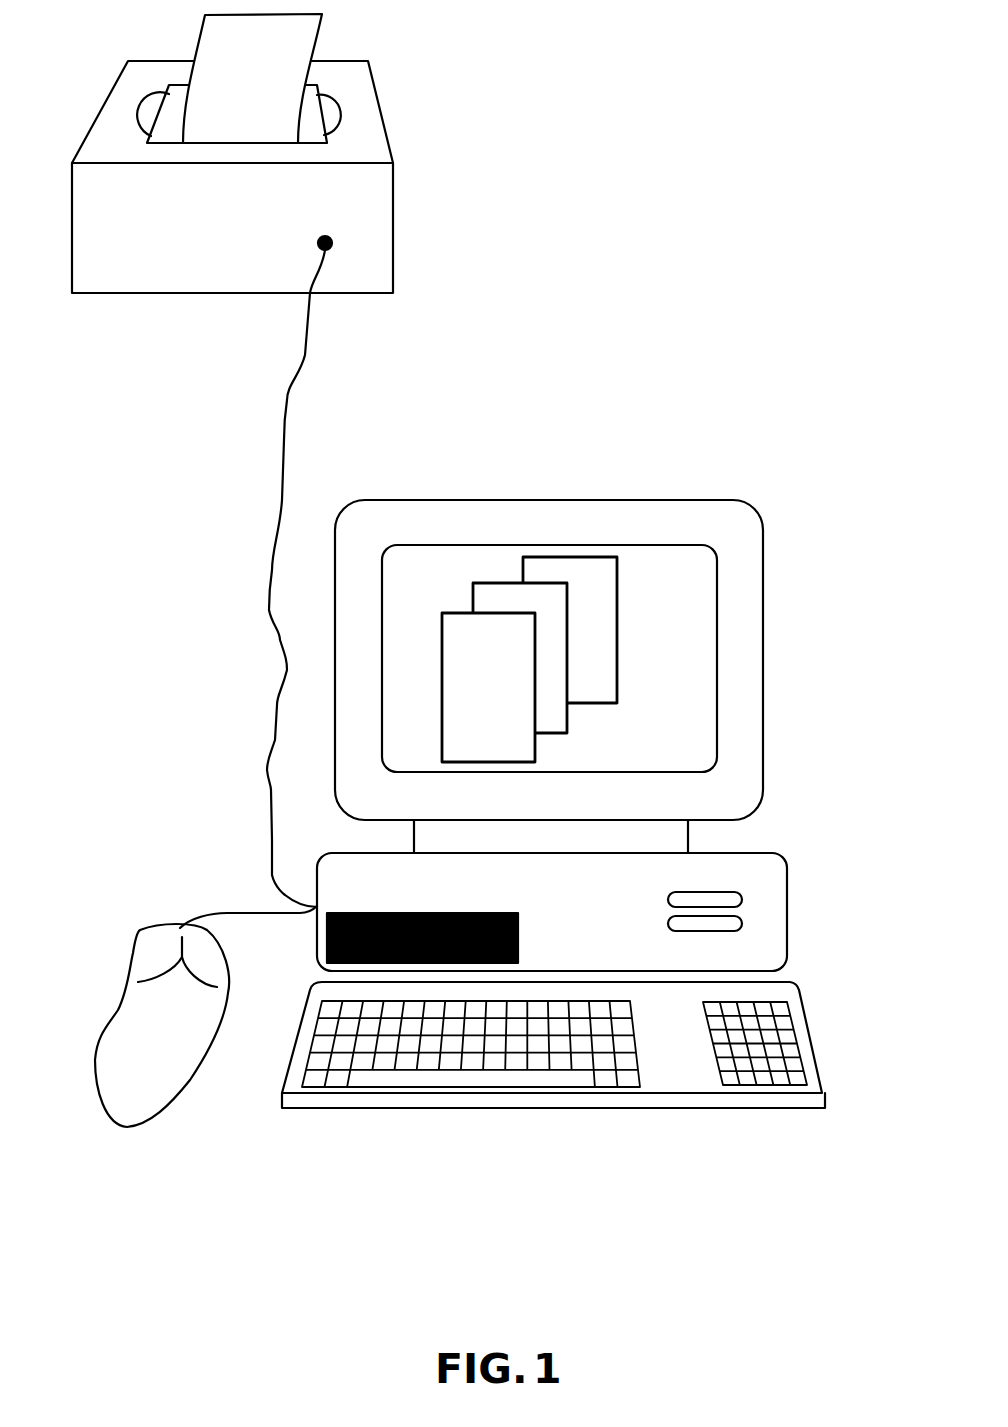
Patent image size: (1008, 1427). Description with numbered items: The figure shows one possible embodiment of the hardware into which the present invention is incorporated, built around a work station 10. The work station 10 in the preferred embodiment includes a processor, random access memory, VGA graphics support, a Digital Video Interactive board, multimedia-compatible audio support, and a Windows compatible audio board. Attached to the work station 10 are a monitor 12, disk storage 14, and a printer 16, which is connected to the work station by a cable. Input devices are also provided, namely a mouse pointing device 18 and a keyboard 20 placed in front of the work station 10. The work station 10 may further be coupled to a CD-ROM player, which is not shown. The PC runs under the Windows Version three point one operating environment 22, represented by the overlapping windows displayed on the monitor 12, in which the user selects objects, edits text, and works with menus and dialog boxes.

The work station 10 is at (775, 855).
The monitor 12 is at (592, 498).
The disk storage 14 is at (742, 928).
The printer 16 is at (393, 243).
The mouse pointing device 18 is at (118, 1017).
The keyboard 20 is at (500, 1107).
The WINDOWS operating environment 22 is at (658, 672).